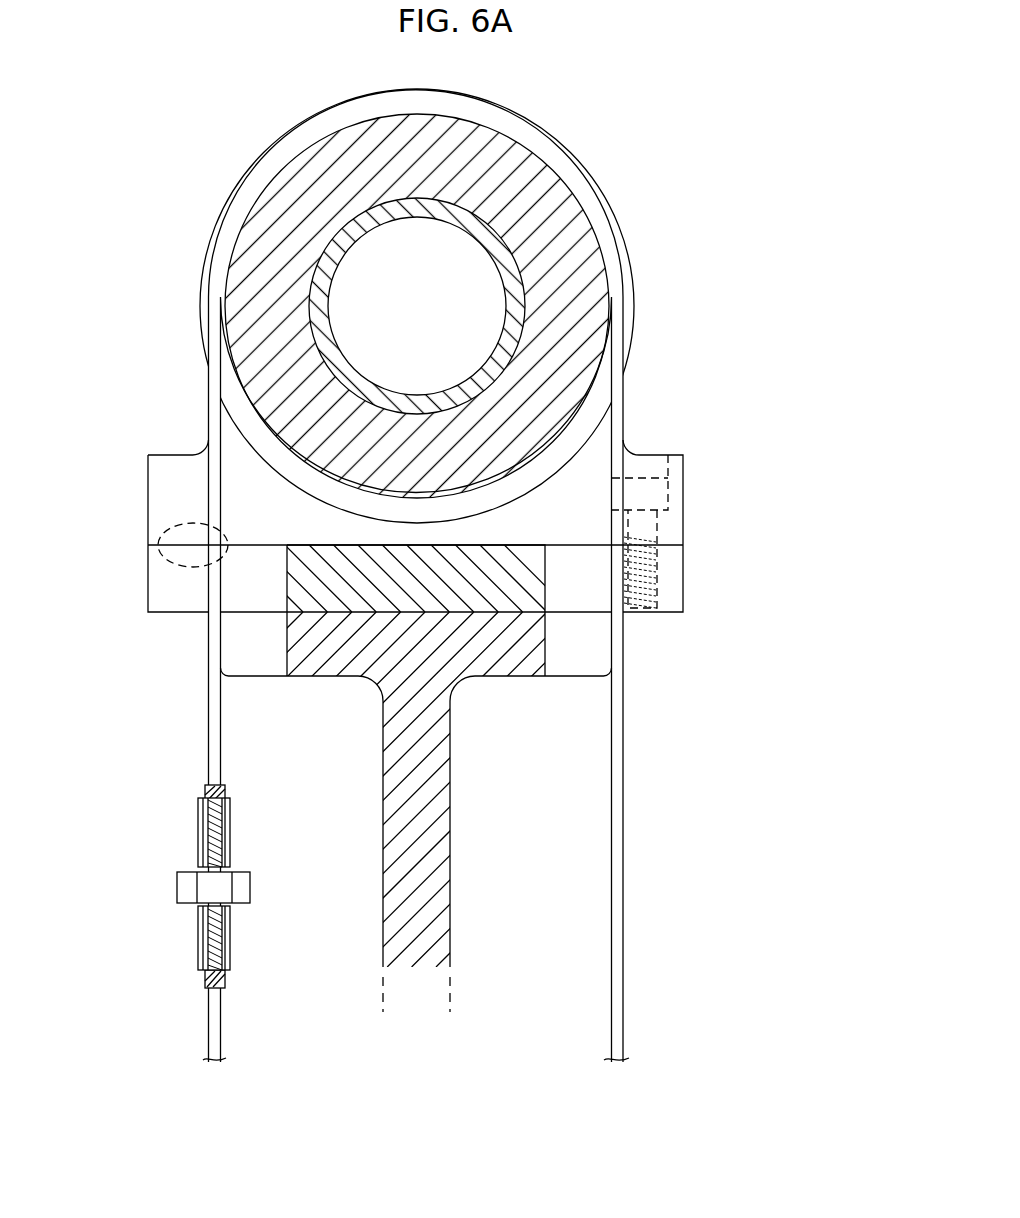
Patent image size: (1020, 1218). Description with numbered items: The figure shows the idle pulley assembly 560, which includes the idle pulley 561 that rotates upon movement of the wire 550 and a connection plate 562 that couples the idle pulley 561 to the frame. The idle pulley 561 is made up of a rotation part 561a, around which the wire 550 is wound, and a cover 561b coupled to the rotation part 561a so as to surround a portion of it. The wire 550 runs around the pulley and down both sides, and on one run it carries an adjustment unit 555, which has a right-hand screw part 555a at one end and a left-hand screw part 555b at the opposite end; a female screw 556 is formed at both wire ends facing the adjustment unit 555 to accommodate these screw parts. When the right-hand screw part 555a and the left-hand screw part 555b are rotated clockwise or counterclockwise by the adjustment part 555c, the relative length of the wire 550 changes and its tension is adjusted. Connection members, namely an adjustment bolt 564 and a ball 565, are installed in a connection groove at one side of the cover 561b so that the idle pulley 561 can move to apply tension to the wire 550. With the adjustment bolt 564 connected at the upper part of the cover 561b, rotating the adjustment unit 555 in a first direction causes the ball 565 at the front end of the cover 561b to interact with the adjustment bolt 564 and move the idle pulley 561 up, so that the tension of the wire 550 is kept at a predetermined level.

The wire 550 is at (211, 695).
The adjustment unit 555 is at (162, 892).
The right-hand screw part 555a is at (200, 838).
The left-hand screw part 555b is at (200, 945).
The adjustment part 555c is at (250, 887).
The female screw 556 is at (206, 795).
The idle pulley assembly 560 is at (752, 164).
The idle pulley 561 is at (622, 91).
The rotation part 561a is at (557, 153).
The cover 561b is at (570, 230).
The connection plate 562 is at (441, 872).
The adjustment bolt 564 is at (650, 527).
The ball 565 is at (165, 525).